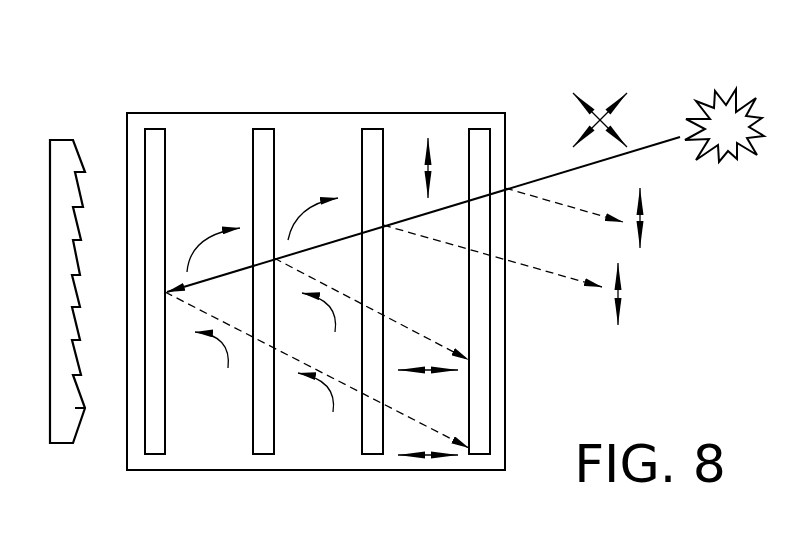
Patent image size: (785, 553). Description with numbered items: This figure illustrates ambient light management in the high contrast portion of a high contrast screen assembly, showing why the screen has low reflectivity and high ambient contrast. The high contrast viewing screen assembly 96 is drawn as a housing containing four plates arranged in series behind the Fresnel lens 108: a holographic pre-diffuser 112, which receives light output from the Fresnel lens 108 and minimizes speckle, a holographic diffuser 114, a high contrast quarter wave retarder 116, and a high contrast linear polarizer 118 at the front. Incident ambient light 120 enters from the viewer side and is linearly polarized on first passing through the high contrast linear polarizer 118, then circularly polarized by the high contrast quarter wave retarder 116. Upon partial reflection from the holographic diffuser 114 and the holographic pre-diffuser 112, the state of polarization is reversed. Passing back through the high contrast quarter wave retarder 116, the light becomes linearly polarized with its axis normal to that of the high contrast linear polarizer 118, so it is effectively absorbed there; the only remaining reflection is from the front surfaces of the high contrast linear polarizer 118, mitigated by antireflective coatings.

The high contrast viewing screen assembly 96 is at (190, 472).
The Fresnel lens 108 is at (63, 150).
The holographic pre-diffuser 112 is at (155, 135).
The holographic diffuser 114 is at (265, 137).
The high contrast quarter wave retarder 116 is at (375, 137).
The high contrast linear polarizer 118 is at (485, 137).
The incident ambient light 120 is at (543, 175).